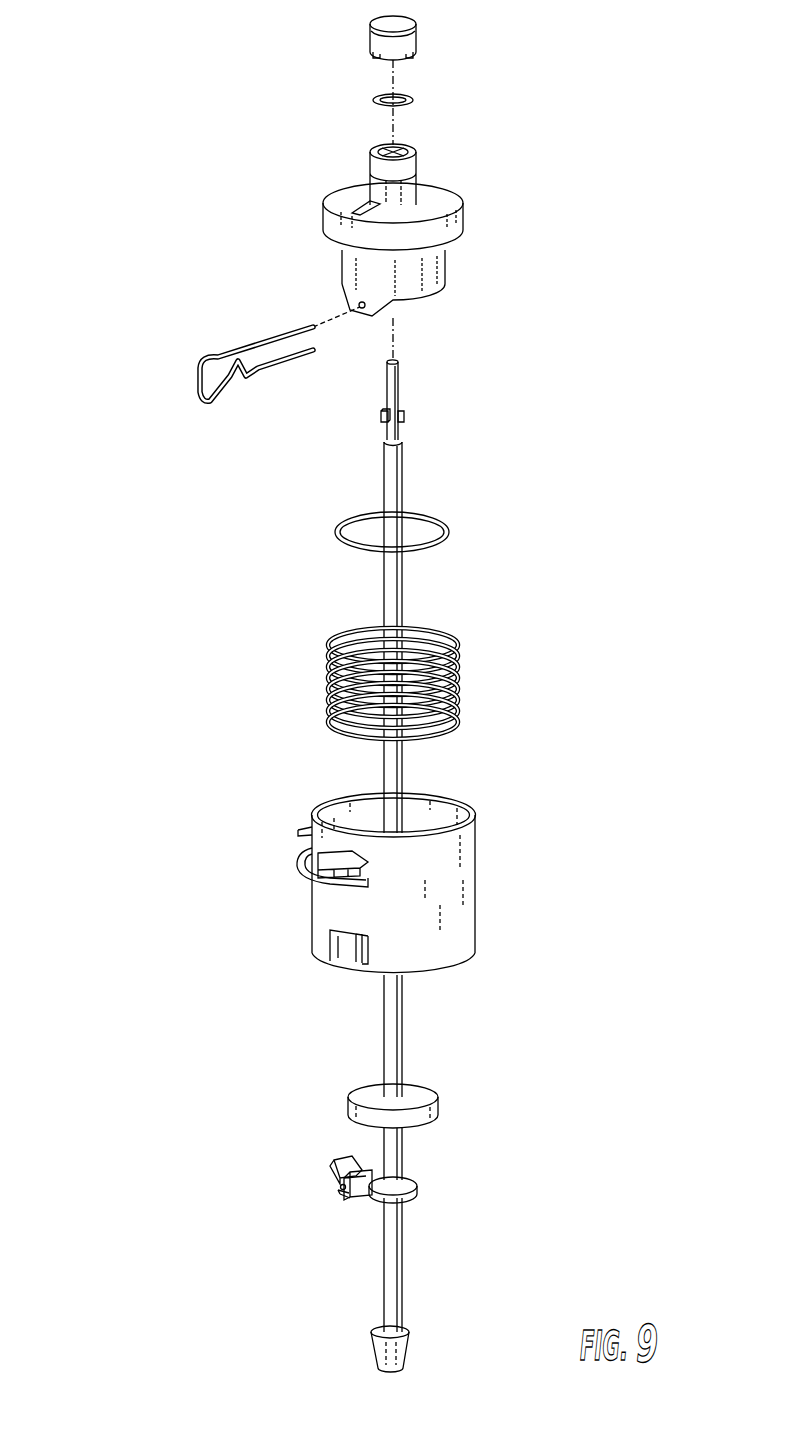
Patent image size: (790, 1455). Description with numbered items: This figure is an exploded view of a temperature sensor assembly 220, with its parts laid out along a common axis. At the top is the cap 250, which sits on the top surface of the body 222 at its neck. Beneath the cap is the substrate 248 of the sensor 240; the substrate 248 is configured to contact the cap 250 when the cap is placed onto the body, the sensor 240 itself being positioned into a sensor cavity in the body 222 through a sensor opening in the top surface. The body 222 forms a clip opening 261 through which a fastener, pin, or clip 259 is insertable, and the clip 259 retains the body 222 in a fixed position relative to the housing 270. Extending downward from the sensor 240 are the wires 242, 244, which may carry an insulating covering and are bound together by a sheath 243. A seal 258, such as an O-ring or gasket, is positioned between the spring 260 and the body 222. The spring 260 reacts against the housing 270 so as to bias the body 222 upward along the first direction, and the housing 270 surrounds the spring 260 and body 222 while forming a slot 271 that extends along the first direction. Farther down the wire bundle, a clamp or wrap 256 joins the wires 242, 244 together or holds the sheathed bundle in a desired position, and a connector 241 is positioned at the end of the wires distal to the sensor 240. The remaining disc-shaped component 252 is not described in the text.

The sensor assembly 220 is at (183, 88).
The cap 250 is at (413, 40).
The substrate 248 is at (426, 92).
The body 222 is at (440, 200).
The clip opening 261 is at (353, 305).
The clip 259 is at (270, 340).
The sensor 240 is at (400, 357).
The wire 244 is at (385, 380).
The wire 242 is at (405, 429).
The sheath 243 is at (390, 475).
The seal 258 is at (446, 530).
The spring 260 is at (482, 668).
The housing 270 is at (447, 893).
The slot 271 is at (348, 960).
The disc 252 is at (432, 1110).
The clamp 256 is at (426, 1180).
The connector 241 is at (416, 1340).